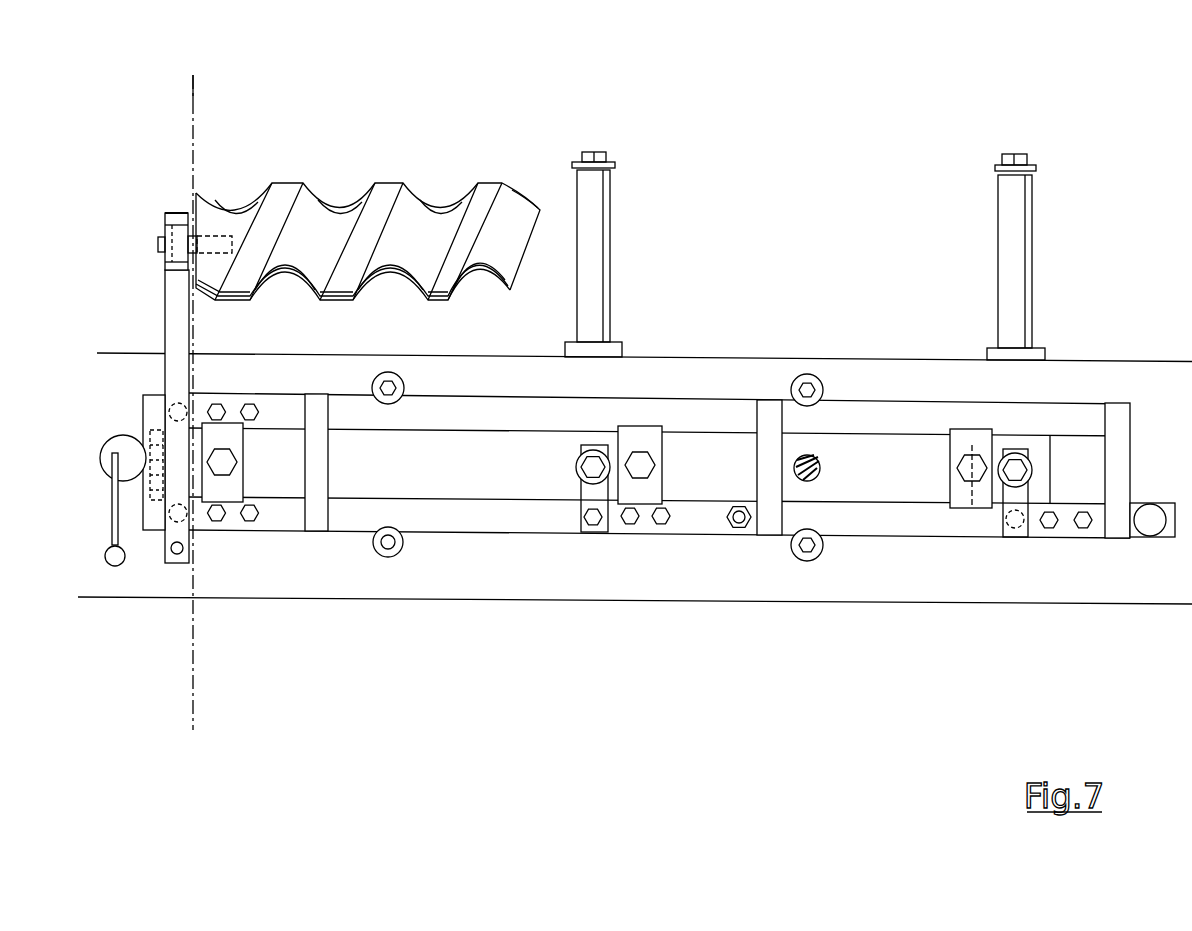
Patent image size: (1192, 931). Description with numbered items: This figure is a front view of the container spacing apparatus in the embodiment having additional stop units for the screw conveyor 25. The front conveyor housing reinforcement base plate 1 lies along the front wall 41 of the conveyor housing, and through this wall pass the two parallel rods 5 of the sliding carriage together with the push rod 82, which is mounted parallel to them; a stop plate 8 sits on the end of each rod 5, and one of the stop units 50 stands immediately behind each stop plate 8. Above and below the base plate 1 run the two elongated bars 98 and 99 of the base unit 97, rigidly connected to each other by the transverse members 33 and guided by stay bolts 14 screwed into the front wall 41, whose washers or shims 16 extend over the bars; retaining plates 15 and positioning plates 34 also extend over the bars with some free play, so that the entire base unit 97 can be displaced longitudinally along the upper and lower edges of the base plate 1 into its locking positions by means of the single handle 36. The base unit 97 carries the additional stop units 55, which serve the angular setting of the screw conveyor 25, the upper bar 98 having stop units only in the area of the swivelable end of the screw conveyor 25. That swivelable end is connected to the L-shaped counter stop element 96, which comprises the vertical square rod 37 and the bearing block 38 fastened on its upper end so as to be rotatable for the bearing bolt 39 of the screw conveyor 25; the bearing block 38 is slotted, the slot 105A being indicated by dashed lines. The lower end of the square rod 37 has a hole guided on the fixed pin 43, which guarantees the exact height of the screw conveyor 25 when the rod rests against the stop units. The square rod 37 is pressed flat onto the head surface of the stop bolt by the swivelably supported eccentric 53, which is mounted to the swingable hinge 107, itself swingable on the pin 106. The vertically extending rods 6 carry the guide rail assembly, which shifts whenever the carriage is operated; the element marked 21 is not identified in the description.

The base plate 1 is at (928, 482).
The rods 5 is at (578, 466).
The vertically extending rods 6 is at (604, 247).
The stop plate 8 is at (200, 85).
The stay bolts 14 is at (384, 556).
The retaining plates 15 is at (650, 428).
The shim 16 is at (392, 557).
The adjustment nut 21 is at (737, 527).
The screw conveyor 25 is at (340, 213).
The transverse members 33 is at (317, 531).
The positioning plates 34 is at (228, 497).
The handle 36 is at (1158, 532).
The square rod 37 is at (170, 298).
The bearing block 38 is at (165, 230).
The bearing bolt 39 is at (158, 244).
The front wall 41 is at (142, 575).
The fixed pin 43 is at (178, 556).
The stop unit 50 is at (626, 546).
The eccentric 53 is at (115, 445).
The additional stop units 55 is at (222, 550).
The push rod 82 is at (819, 460).
The L-shaped counter stop element 96 is at (135, 262).
The base unit 97 is at (1133, 391).
The upper bar 98 is at (745, 415).
The lower bar 99 is at (490, 520).
The slot 105A is at (170, 212).
The pin 106 is at (152, 415).
The hinge 107 is at (145, 476).